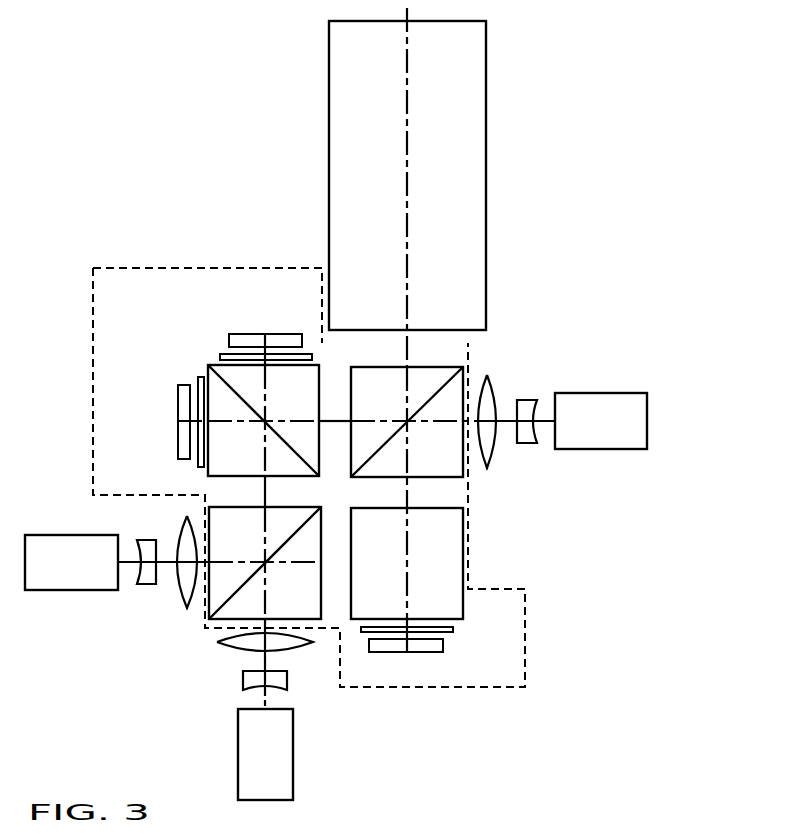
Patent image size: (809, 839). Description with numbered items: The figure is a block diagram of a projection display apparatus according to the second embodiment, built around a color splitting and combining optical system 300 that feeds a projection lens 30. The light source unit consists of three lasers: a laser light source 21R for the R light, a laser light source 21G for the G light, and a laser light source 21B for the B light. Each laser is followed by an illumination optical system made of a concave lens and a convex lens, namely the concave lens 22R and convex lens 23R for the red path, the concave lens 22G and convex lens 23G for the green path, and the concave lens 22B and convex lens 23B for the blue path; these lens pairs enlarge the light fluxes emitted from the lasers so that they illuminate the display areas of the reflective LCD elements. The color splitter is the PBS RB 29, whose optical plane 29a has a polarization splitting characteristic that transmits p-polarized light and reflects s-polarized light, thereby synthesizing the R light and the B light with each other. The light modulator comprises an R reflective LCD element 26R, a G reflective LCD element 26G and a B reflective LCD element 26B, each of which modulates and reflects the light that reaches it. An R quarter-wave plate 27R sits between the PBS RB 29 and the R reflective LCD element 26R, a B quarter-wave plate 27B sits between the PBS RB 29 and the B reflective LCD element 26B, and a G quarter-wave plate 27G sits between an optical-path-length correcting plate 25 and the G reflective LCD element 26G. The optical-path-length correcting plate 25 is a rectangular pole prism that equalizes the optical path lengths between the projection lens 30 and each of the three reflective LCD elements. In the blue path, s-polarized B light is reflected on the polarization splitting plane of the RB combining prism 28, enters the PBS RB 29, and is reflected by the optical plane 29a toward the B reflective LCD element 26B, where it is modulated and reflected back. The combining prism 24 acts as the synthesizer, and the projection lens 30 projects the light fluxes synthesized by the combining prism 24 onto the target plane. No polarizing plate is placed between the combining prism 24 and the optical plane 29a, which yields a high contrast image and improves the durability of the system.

The color splitting and combining optical system 300 is at (168, 272).
The projection lens 30 is at (477, 237).
The PBS RB 29 is at (222, 466).
The optical plane 29a is at (282, 435).
The R reflective LCD element 26R is at (240, 340).
The R quarter-wave plate 27R is at (222, 357).
The B reflective LCD element 26B is at (182, 411).
The B quarter-wave plate 27B is at (198, 383).
The combining prism 24 is at (447, 467).
The optical-path-length correcting plate 25 is at (449, 592).
The RB combining prism 28 is at (302, 612).
The convex lens 23G is at (490, 453).
The concave lens 22G is at (530, 400).
The laser light source 21G is at (590, 449).
The laser light source 21B is at (69, 585).
The concave lens 22B is at (138, 540).
The convex lens 23B is at (183, 605).
The convex lens 23R is at (233, 647).
The concave lens 22R is at (277, 682).
The laser light source 21R is at (280, 760).
The G quarter-wave plate 27G is at (453, 629).
The G reflective LCD element 26G is at (442, 650).